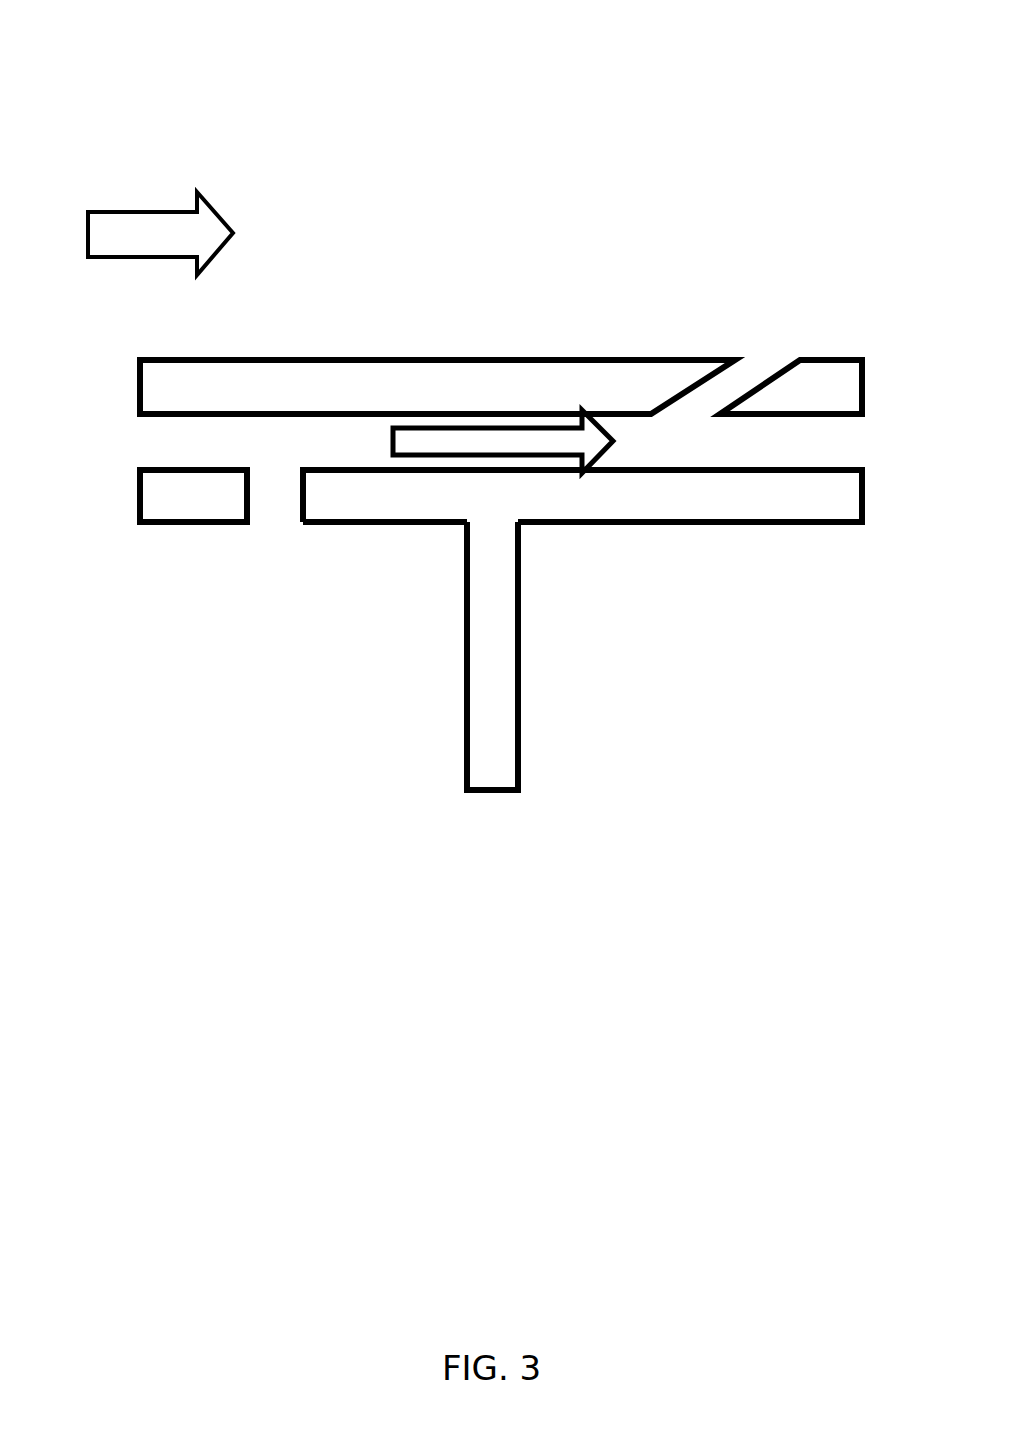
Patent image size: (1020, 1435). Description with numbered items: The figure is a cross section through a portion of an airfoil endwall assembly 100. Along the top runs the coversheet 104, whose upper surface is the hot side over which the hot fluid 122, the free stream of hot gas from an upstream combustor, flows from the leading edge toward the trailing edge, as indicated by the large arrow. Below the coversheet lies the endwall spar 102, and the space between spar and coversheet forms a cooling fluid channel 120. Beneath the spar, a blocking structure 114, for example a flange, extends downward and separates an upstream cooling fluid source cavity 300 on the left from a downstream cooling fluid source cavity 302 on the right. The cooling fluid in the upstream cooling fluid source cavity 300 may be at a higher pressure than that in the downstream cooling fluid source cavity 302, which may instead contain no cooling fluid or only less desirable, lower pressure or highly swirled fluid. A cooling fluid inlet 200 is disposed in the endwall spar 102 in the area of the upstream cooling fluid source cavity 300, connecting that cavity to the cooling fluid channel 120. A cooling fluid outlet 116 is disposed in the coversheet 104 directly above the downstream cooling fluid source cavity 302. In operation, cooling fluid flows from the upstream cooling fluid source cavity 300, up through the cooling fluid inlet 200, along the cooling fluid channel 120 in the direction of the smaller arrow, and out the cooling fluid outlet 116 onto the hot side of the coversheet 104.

The endwall assembly 100 is at (258, 150).
The endwall spar 102 is at (197, 490).
The coversheet 104 is at (566, 392).
The blocking structure 114 is at (492, 765).
The cooling fluid outlet 116 is at (718, 380).
The cooling fluid channel 120 is at (814, 452).
The hot fluid 122 is at (160, 233).
The cooling fluid inlet 200 is at (268, 500).
The upstream cooling fluid source cavity 300 is at (218, 645).
The downstream cooling fluid source cavity 302 is at (673, 633).